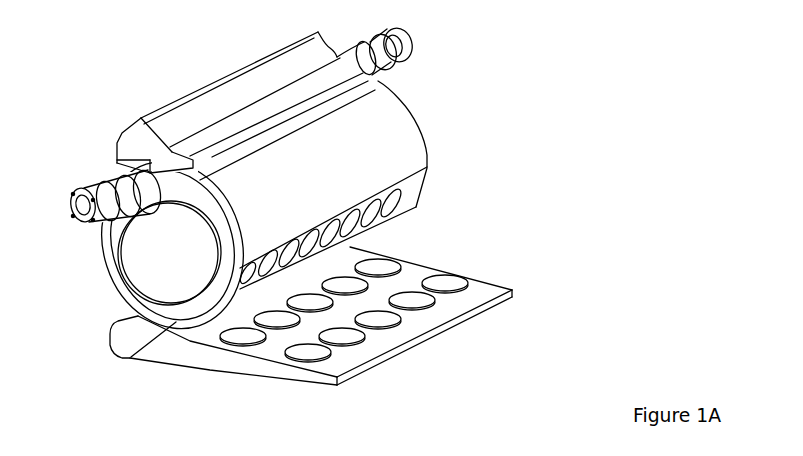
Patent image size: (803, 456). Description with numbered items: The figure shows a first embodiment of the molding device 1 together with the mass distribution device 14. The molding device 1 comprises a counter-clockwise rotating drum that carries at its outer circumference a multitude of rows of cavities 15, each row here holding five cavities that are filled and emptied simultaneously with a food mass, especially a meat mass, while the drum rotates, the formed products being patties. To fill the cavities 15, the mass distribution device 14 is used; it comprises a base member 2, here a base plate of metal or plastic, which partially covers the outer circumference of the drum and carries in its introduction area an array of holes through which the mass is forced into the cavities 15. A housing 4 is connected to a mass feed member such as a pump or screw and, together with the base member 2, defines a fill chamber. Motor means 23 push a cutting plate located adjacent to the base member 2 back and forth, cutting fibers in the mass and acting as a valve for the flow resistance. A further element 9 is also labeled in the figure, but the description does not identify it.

The molding device 1 is at (537, 78).
The base member 2 is at (366, 147).
The housing 4 is at (138, 140).
The front opening 9 is at (180, 283).
The mass distribution device 14 is at (183, 74).
The cavities 15 is at (287, 253).
The motor means 23 is at (85, 205).